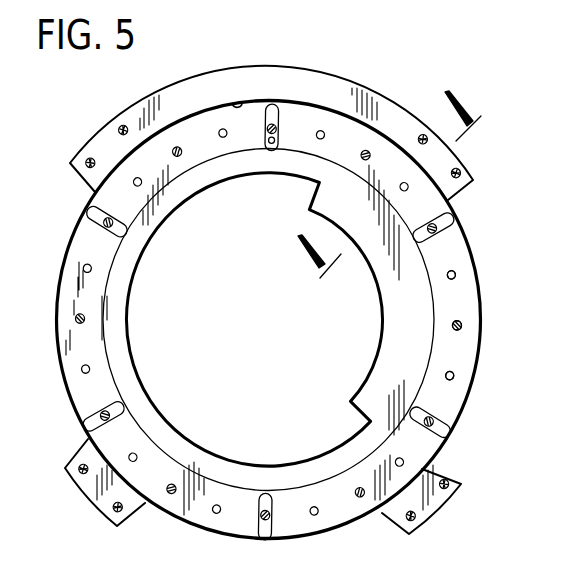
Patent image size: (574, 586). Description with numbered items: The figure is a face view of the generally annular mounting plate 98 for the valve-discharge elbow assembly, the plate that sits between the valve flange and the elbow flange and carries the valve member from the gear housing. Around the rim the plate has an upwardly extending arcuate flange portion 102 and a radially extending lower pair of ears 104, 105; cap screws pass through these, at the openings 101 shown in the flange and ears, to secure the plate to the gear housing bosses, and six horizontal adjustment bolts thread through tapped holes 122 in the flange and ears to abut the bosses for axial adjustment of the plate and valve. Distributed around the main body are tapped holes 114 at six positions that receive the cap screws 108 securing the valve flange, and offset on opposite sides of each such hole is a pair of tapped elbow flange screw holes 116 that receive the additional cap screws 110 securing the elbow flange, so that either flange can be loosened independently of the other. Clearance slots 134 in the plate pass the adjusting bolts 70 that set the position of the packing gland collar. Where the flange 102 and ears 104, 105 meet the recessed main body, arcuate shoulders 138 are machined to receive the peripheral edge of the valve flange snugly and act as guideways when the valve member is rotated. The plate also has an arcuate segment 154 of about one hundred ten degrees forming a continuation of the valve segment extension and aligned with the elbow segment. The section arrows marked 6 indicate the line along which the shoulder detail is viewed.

The mounting plate 98 is at (478, 235).
The arcuate flange portion 102 is at (314, 64).
The ear 104 is at (441, 514).
The ear 105 is at (93, 509).
The bracket fastener hole 101 is at (421, 136).
The tapped hole 122 is at (121, 126).
The clearance slot 134 is at (264, 125).
The adjusting bolt 70 is at (278, 128).
The arcuate shoulder 138 is at (232, 103).
The arcuate segment 154 is at (382, 329).
The tapped elbow flange screw hole 116 is at (455, 277).
The cap screw 110 is at (452, 281).
The tapped hole 114 is at (458, 329).
The cap screw 108 is at (458, 336).
The section line FIG. 6 is at (396, 198).